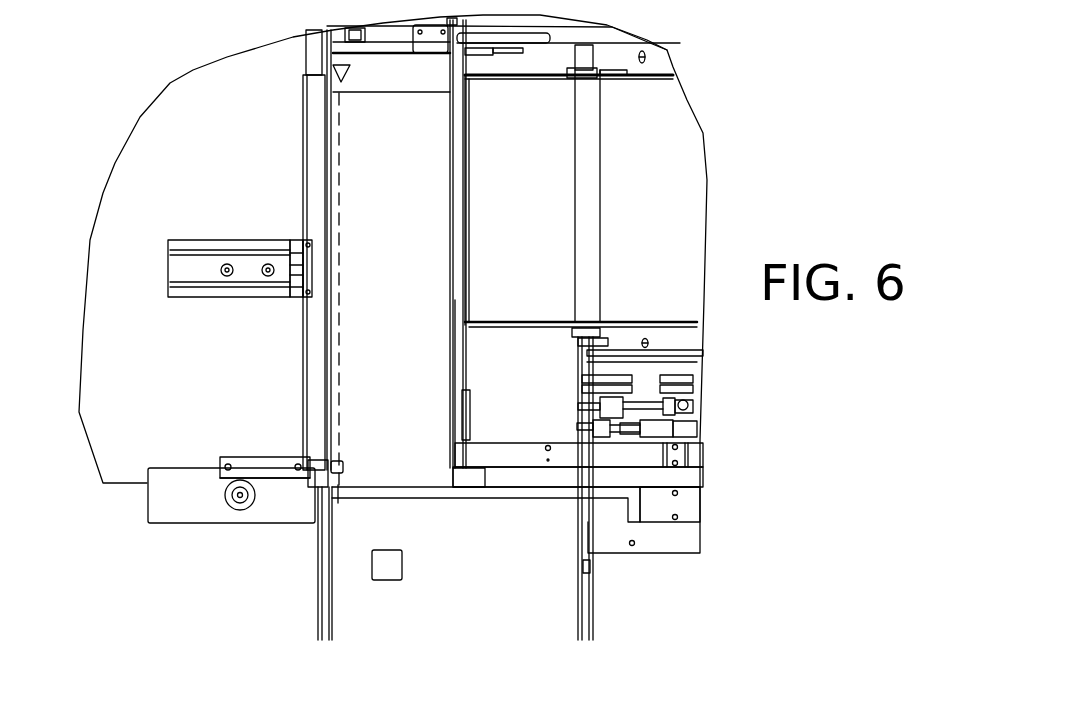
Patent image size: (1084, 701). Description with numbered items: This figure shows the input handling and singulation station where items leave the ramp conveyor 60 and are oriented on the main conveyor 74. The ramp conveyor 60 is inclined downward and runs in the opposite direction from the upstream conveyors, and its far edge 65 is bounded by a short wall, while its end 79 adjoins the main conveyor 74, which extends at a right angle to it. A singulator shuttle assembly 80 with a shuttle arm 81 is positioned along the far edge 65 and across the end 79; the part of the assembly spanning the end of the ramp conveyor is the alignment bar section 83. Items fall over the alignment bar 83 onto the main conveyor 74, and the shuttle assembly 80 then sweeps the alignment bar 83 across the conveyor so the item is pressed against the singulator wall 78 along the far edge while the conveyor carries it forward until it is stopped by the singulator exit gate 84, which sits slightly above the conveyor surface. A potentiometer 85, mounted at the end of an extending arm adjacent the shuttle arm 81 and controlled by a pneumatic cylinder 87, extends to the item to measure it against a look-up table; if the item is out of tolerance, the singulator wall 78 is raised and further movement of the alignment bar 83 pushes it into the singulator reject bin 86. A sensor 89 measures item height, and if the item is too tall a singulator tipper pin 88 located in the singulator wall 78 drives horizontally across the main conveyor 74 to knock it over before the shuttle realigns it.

The ramp conveyor 60 is at (690, 183).
The far edge 65 is at (687, 313).
The main conveyor 74 is at (352, 343).
The singulator wall 78 is at (330, 222).
The end 79 is at (455, 143).
The singulator shuttle assembly 80 is at (747, 427).
The shuttle arm 81 is at (505, 450).
The alignment bar section 83 is at (452, 347).
The singulator exit gate 84 is at (457, 495).
The potentiometer 85 is at (580, 410).
The singulator reject bin 86 is at (172, 117).
The pneumatic cylinder 87 is at (687, 370).
The singulator tipper pin 88 is at (347, 458).
The sensor 89 is at (350, 67).